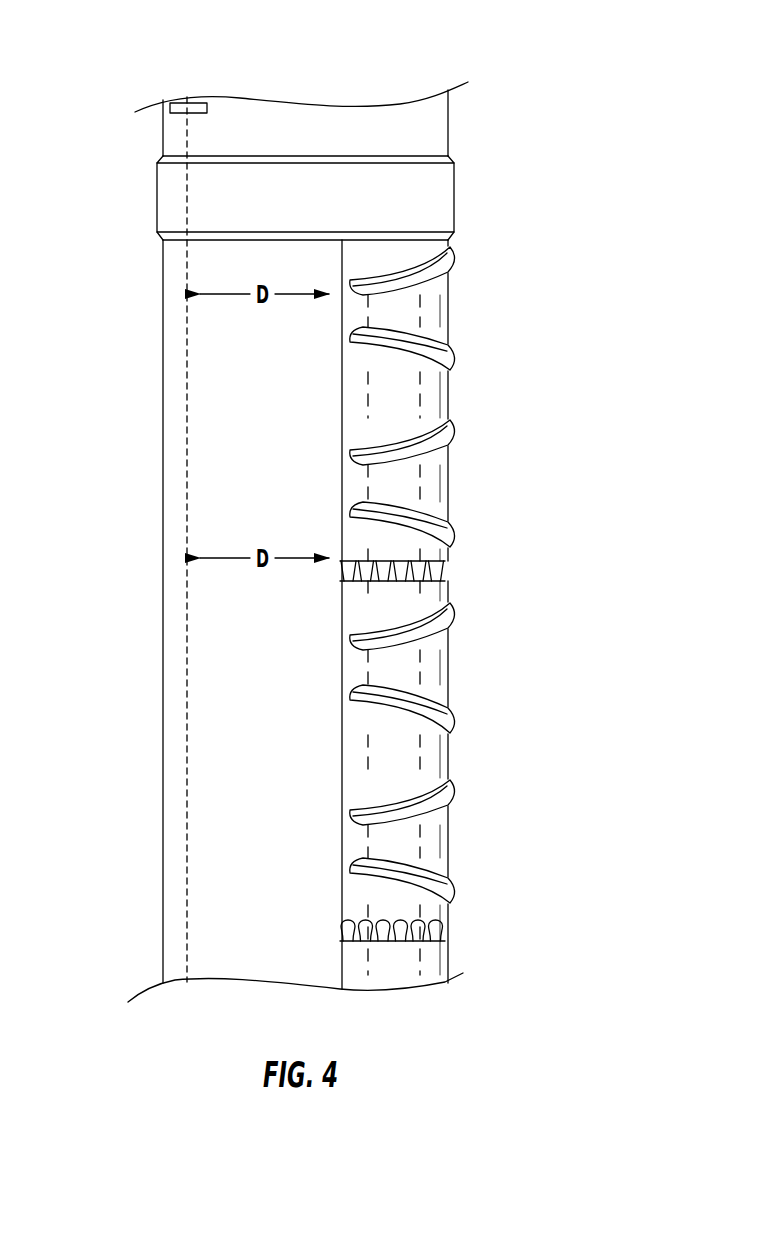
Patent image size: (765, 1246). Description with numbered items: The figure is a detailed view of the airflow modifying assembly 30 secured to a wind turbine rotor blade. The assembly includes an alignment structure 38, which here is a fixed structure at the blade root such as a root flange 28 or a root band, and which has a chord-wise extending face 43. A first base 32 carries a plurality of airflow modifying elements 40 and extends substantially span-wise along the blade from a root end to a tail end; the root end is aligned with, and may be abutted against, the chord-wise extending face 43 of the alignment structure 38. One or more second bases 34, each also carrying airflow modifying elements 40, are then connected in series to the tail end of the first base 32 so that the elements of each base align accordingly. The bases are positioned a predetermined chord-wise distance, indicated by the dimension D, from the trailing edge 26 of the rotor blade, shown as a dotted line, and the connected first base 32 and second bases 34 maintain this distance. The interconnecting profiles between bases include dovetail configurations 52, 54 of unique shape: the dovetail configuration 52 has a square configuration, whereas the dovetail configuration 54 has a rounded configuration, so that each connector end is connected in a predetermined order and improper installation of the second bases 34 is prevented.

The airflow modifying assembly 30 is at (592, 125).
The root flange 28 is at (455, 133).
The alignment structure 38 is at (166, 199).
The chord-wise extending face 43 is at (393, 240).
The trailing edge 26 is at (187, 392).
The first base 32 is at (456, 403).
The second base 34 is at (453, 845).
The airflow modifying elements 40 is at (455, 255).
The dovetail configuration 52 is at (337, 567).
The dovetail configuration 54 is at (339, 931).